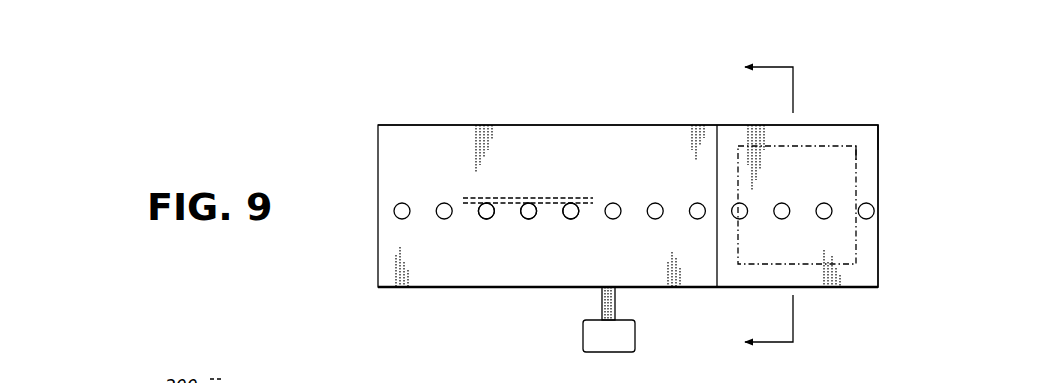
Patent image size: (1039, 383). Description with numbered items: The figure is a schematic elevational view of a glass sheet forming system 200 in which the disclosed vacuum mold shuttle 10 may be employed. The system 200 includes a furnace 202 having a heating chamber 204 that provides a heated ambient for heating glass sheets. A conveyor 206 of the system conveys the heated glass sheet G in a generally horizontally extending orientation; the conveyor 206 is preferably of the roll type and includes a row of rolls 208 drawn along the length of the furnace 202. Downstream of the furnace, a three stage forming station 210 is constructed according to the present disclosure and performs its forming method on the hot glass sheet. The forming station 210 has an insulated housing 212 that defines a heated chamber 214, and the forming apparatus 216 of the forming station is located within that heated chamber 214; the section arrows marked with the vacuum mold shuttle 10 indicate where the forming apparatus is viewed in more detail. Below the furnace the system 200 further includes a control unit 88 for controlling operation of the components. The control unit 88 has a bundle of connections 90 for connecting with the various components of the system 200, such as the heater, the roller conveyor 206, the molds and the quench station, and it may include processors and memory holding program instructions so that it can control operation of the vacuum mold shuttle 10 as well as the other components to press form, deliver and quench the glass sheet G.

The glass sheet forming system 200 is at (618, 88).
The furnace 202 is at (512, 118).
The heating chamber 204 is at (617, 148).
The conveyor 206 is at (376, 211).
The rolls 208 is at (570, 220).
The glass sheet G is at (472, 196).
The three stage forming station 210 is at (847, 98).
The insulated housing 212 is at (870, 120).
The heated chamber 214 is at (868, 176).
The forming apparatus 216 is at (860, 145).
The bundle of connections 90 is at (602, 301).
The control unit 88 is at (637, 335).
The vacuum mold shuttle 10 is at (788, 207).